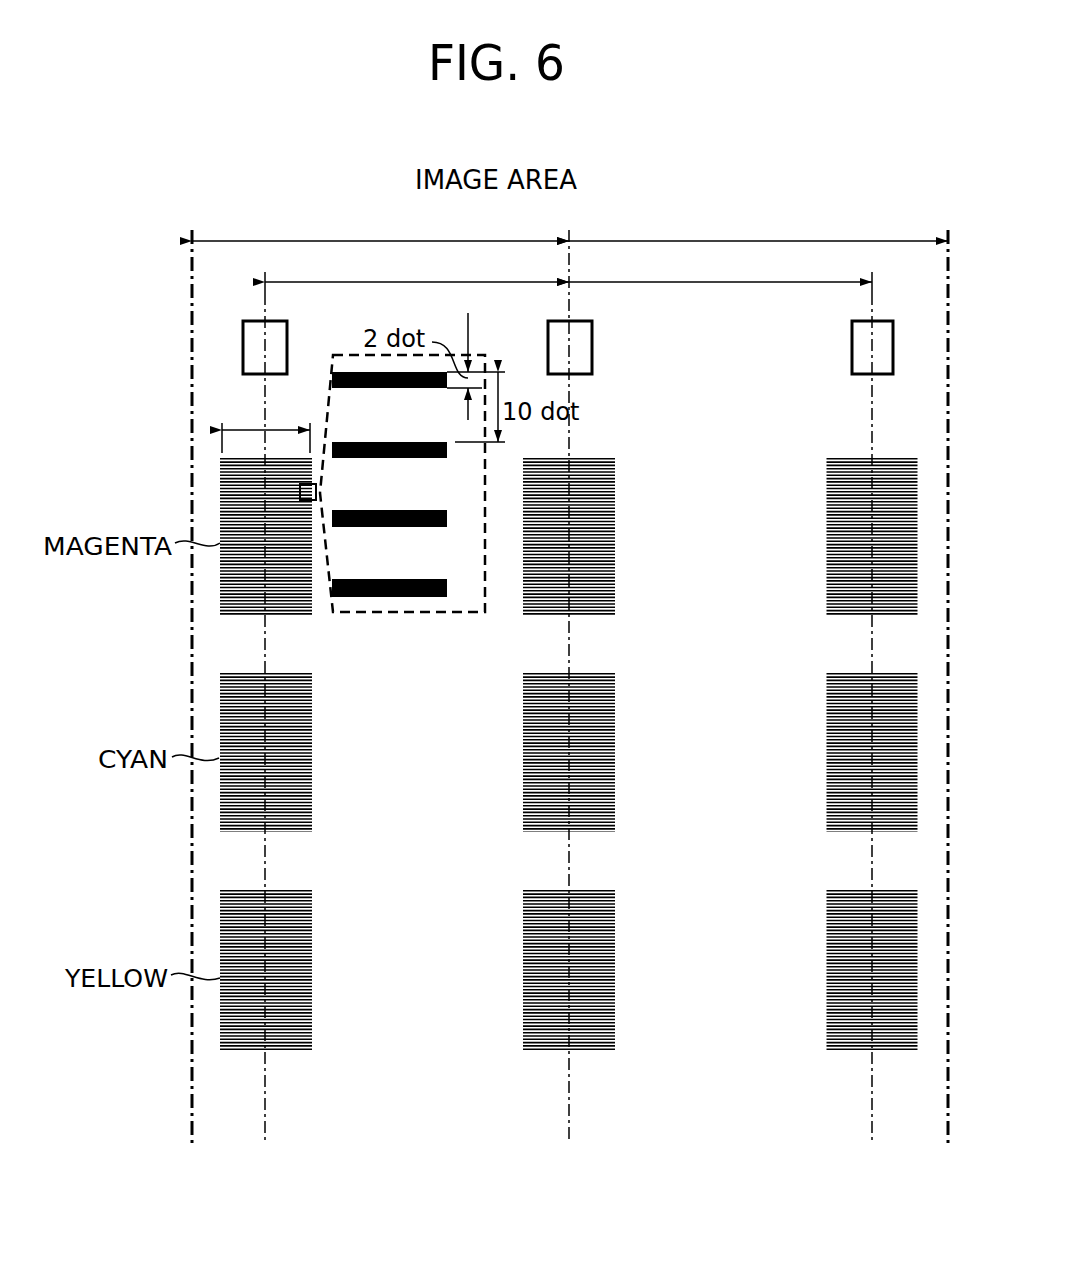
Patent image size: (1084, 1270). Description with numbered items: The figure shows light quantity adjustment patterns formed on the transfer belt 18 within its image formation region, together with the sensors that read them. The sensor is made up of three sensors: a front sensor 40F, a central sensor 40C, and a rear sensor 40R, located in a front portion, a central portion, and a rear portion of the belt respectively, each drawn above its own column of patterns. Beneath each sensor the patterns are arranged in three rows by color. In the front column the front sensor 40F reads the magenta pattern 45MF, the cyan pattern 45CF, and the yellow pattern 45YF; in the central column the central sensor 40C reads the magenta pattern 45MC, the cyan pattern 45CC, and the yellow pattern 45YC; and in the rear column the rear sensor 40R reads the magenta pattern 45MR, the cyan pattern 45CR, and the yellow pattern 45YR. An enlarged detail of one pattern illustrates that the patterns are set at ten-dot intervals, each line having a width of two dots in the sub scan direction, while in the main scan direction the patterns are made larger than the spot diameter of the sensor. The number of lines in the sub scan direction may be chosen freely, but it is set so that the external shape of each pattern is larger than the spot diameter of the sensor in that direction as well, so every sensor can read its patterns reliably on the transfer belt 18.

The transfer belt 18 is at (207, 1080).
The front sensor 40F is at (243, 352).
The central sensor 40C is at (592, 335).
The rear sensor 40R is at (852, 363).
The magenta front light quantity adjustment pattern 45MF is at (303, 616).
The magenta central light quantity adjustment pattern 45MC is at (608, 616).
The magenta rear light quantity adjustment pattern 45MR is at (838, 616).
The cyan front light quantity adjustment pattern 45CF is at (303, 833).
The cyan central light quantity adjustment pattern 45CC is at (608, 833).
The cyan rear light quantity adjustment pattern 45CR is at (838, 833).
The yellow front light quantity adjustment pattern 45YF is at (303, 1051).
The yellow central light quantity adjustment pattern 45YC is at (608, 1051).
The yellow rear light quantity adjustment pattern 45YR is at (838, 1051).